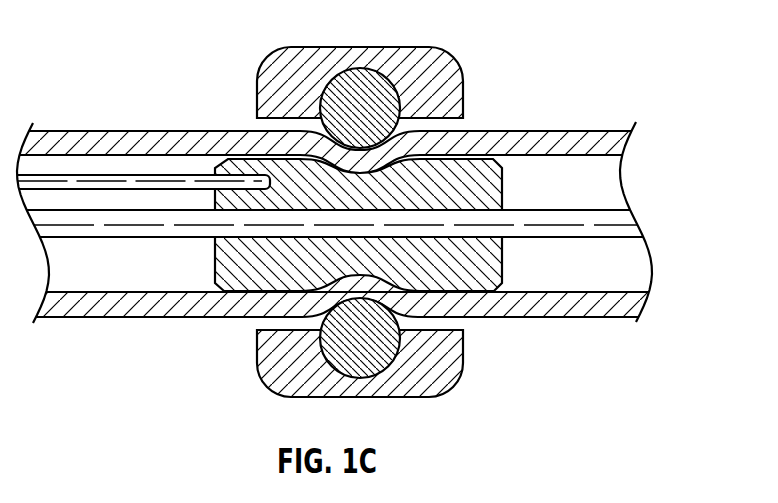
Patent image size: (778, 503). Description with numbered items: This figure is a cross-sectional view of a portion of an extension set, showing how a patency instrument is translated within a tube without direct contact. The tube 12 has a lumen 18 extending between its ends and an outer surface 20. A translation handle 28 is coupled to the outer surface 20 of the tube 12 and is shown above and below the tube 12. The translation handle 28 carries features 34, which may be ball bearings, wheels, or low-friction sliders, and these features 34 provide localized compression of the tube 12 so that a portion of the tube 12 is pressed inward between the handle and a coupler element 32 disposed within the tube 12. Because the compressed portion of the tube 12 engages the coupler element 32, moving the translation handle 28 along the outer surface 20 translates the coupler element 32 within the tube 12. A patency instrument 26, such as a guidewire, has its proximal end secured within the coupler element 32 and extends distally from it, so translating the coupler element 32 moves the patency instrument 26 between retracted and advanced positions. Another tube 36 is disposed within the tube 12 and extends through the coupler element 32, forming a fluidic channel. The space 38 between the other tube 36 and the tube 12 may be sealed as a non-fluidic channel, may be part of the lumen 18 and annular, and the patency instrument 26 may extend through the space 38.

The tube 12 is at (597, 140).
The lumen 18 is at (115, 268).
The outer surface 20 is at (522, 130).
The patency instrument 26 is at (108, 176).
The translation handle 28 is at (447, 74).
The coupler element 32 is at (480, 281).
The features 34 is at (357, 100).
The other tube 36 is at (132, 223).
The space 38 is at (610, 187).